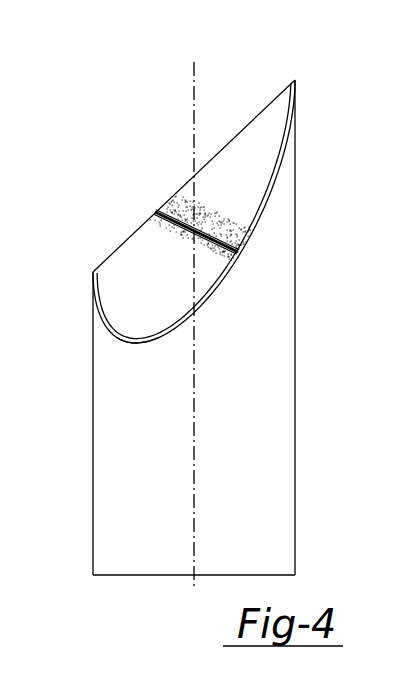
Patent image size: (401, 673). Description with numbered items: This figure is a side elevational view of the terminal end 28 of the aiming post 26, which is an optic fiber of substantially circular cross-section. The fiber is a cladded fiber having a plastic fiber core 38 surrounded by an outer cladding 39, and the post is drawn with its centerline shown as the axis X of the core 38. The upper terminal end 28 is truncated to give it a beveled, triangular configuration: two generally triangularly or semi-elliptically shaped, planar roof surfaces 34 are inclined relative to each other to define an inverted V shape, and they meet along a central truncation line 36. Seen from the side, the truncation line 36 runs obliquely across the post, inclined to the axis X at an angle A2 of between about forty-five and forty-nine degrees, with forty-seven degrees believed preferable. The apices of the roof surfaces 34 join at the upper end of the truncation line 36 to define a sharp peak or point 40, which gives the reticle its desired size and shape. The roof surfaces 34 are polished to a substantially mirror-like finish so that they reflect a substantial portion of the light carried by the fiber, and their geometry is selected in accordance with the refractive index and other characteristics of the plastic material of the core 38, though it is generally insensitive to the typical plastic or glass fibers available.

The aiming post 26 is at (88, 410).
The terminal end 28 is at (157, 211).
The roof surfaces 34 is at (252, 145).
The central truncation line 36 is at (263, 105).
The fiber core 38 is at (213, 243).
The outer cladding 39 is at (134, 345).
The peak or point 40 is at (295, 80).
The angle A2 is at (184, 273).
The axis X is at (194, 368).